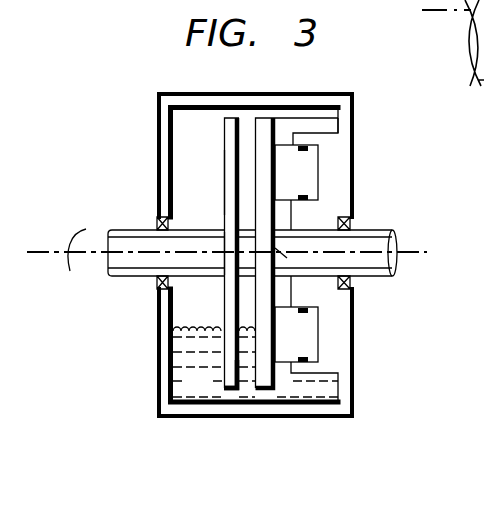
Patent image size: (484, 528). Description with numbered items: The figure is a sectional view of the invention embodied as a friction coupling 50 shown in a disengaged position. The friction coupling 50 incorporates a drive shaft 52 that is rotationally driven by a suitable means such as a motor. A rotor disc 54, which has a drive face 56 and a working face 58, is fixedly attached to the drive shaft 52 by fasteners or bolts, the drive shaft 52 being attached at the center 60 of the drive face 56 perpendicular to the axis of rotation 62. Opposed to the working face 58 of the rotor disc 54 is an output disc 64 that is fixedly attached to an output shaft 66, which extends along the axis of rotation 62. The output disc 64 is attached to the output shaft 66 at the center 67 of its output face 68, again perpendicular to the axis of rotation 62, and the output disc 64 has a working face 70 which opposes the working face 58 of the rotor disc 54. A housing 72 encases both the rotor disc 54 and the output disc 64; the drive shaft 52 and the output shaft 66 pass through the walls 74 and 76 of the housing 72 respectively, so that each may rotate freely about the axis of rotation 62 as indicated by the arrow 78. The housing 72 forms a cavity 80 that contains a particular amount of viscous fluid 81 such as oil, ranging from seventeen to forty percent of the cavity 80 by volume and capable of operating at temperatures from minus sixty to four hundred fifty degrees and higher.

The friction coupling 50 is at (87, 102).
The drive shaft 52 is at (127, 279).
The rotor disc 54 is at (231, 117).
The drive face 56 is at (221, 181).
The working face 58 is at (242, 373).
The center 60 is at (219, 247).
The axis of rotation 62 is at (50, 256).
The output disc 64 is at (260, 117).
The output shaft 66 is at (385, 229).
The center 67 is at (282, 253).
The output face 68 is at (277, 123).
The working face 70 is at (258, 178).
The housing 72 is at (180, 417).
The wall 74 is at (157, 106).
The wall 76 is at (352, 403).
The arrow 78 is at (91, 242).
The cavity 80 is at (210, 314).
The viscous fluid 81 is at (210, 393).